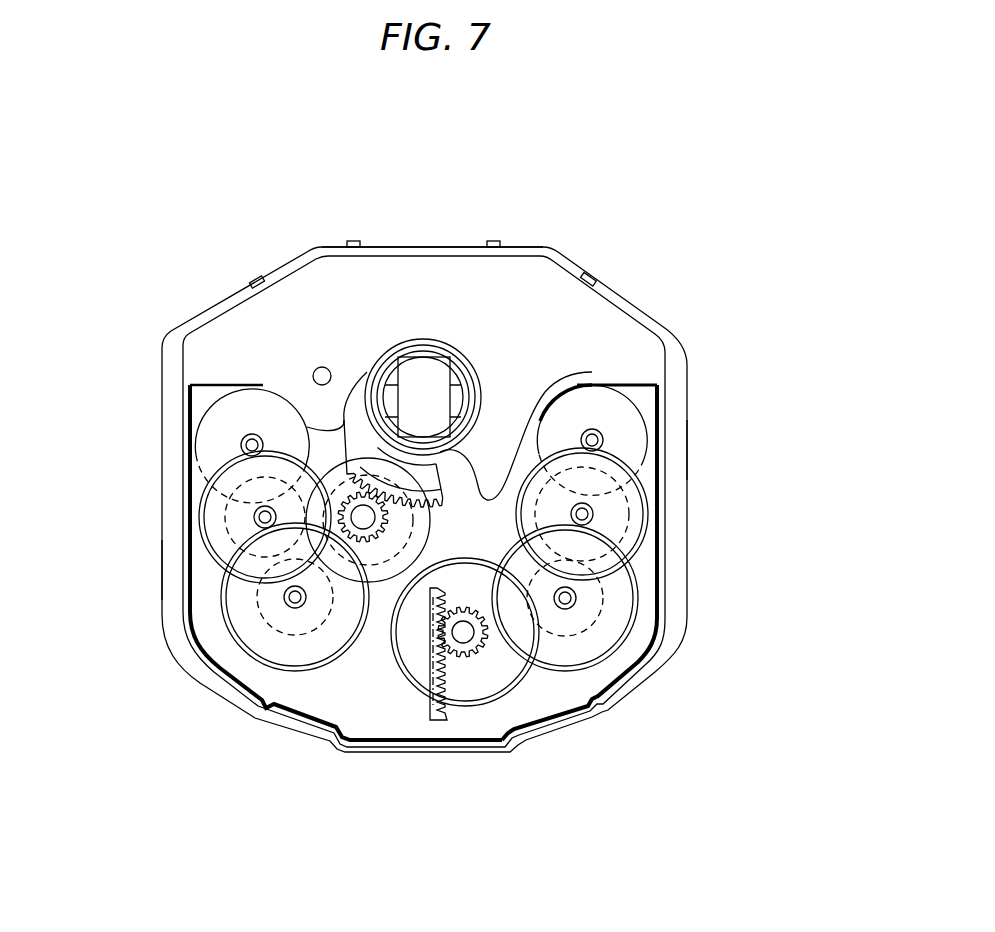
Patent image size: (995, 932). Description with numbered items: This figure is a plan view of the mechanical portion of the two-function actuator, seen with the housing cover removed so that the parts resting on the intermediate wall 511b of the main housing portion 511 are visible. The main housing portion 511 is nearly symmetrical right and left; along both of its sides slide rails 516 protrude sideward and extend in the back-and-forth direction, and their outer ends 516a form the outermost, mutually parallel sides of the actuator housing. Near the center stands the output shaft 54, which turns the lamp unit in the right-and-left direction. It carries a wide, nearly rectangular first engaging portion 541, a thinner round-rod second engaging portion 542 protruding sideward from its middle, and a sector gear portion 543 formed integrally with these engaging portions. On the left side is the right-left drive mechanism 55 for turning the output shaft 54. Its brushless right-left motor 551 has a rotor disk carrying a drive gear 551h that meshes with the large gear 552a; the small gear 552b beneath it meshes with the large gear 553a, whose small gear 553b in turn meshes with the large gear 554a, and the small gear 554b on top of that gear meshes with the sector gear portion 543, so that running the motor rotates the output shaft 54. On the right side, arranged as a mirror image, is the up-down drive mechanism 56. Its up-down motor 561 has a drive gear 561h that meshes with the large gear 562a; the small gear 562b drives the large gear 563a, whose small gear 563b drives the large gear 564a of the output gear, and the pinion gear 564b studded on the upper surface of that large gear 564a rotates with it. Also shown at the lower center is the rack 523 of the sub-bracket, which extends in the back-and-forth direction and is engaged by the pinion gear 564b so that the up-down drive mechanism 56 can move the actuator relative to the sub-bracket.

The main housing portion 511 is at (617, 295).
The intermediate wall 511b is at (405, 287).
The slide rail 516 is at (165, 526).
The outer end of slide rail 516a is at (160, 560).
The output shaft 54 is at (427, 375).
The first engaging portion 541 is at (447, 375).
The second engaging portion 542 is at (370, 362).
The sector gear portion 543 is at (413, 487).
The right-left drive mechanism 55 is at (260, 690).
The up-down drive mechanism 56 is at (663, 585).
The right-left motor 551 is at (252, 407).
The drive gear 551h is at (246, 440).
The large gear 552a is at (207, 478).
The small gear 552b is at (225, 500).
The large gear 553a is at (228, 628).
The small gear 553b is at (258, 632).
The large gear 554a is at (373, 542).
The small gear 554b is at (362, 566).
The up-down motor 561 is at (610, 410).
The drive gear 561h is at (600, 437).
The large gear 562a is at (648, 510).
The small gear 562b is at (650, 552).
The large gear 563a is at (632, 636).
The small gear 563b is at (610, 630).
The large gear 564a is at (527, 657).
The pinion gear 564b is at (480, 655).
The rack 523 is at (450, 677).